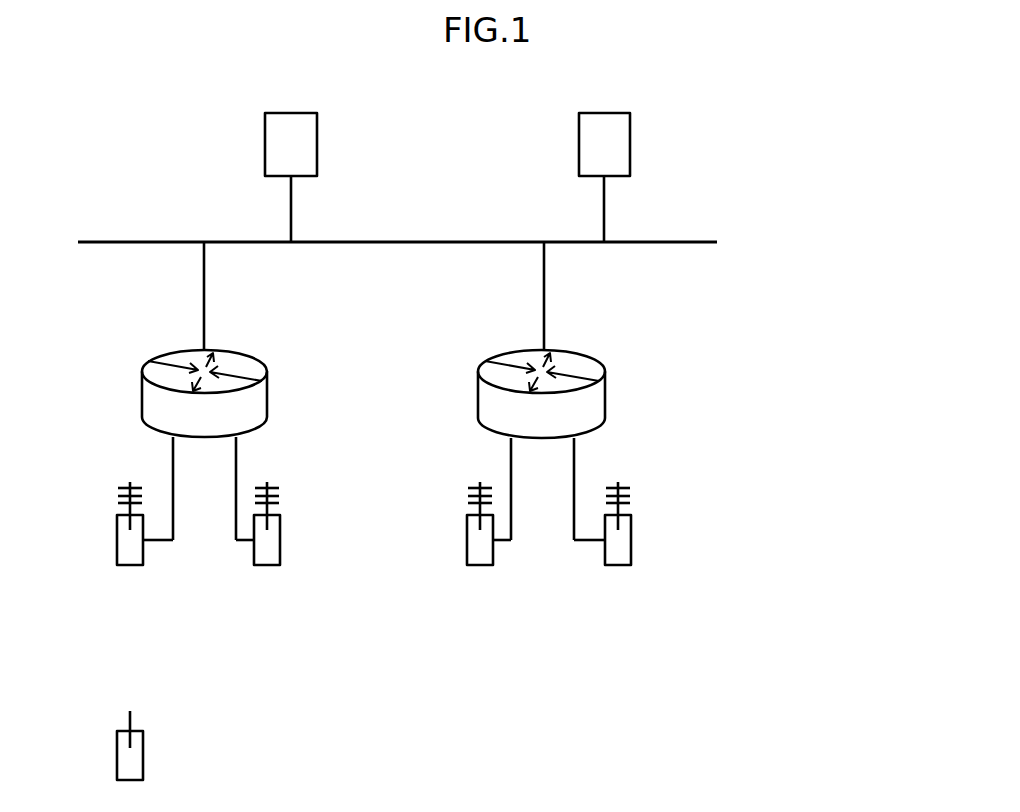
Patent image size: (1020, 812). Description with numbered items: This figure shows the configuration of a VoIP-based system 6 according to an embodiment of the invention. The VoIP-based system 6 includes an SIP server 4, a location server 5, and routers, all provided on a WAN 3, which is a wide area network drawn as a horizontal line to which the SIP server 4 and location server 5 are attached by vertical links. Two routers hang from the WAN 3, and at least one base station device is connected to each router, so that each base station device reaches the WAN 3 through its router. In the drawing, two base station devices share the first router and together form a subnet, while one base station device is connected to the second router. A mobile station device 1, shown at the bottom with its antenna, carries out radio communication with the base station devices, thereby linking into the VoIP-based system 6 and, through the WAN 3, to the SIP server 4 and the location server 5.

The mobile station device 1 is at (143, 760).
The WAN 3 is at (678, 242).
The SIP server 4 is at (630, 140).
The location server 5 is at (278, 113).
The VoIP-based system 6 is at (645, 418).